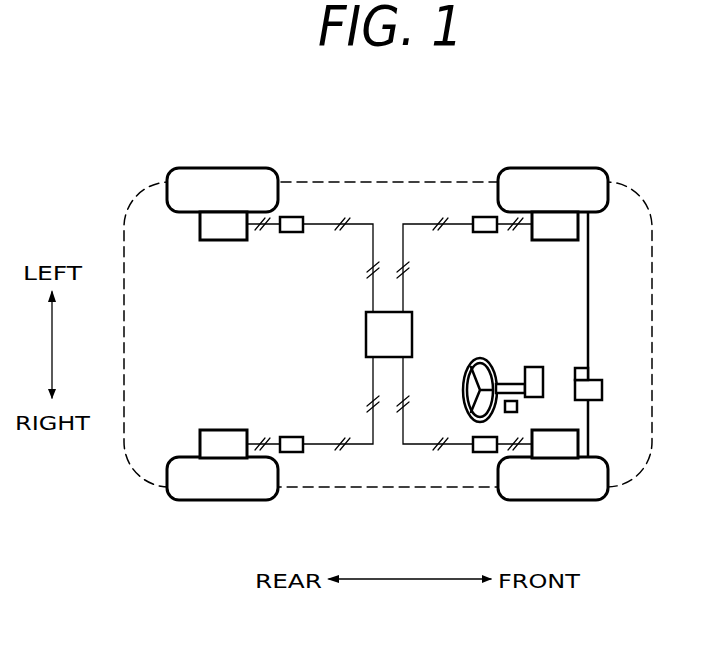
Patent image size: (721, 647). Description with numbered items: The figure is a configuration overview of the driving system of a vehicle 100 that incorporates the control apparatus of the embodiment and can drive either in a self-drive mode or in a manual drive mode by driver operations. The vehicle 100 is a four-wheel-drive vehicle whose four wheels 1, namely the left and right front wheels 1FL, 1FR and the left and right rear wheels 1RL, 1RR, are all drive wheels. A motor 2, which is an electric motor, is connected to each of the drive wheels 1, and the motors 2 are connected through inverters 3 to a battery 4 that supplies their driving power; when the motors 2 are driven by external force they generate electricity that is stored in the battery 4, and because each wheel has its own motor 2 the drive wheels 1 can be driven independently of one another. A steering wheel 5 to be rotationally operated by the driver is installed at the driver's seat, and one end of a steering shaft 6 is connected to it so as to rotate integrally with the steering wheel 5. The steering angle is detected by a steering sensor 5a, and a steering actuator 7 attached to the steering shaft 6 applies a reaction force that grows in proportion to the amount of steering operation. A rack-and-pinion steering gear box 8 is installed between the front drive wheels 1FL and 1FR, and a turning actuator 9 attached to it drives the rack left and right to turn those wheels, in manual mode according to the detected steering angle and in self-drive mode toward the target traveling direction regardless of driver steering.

The vehicle 100 is at (560, 93).
The wheels 1 is at (414, 344).
The left rear wheel 1RL is at (196, 167).
The left front wheel 1FL is at (572, 167).
The right rear wheel 1RR is at (197, 501).
The right front wheel 1FR is at (585, 501).
The motor 2 is at (200, 233).
The inverter 3 is at (289, 216).
The battery 4 is at (412, 325).
The steering wheel 5 is at (480, 357).
The steering sensor 5a is at (518, 405).
The steering shaft 6 is at (510, 384).
The steering actuator 7 is at (533, 367).
The steering gear box 8 is at (602, 390).
The turning actuator 9 is at (580, 368).